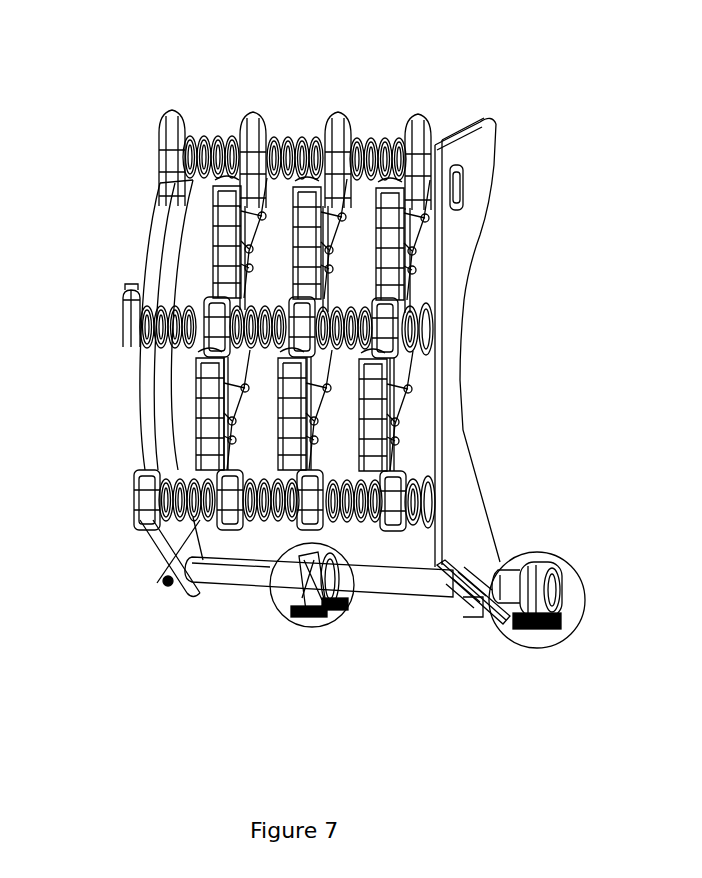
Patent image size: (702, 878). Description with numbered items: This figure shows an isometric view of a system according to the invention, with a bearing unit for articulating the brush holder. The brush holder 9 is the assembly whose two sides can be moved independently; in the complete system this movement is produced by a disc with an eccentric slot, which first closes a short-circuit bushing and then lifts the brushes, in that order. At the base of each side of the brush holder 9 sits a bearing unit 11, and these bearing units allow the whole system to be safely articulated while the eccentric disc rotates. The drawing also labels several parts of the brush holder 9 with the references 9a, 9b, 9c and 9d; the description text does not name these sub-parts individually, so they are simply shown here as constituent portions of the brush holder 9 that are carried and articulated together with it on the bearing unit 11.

The brush holder 9 is at (475, 172).
The bottom bar 9a is at (235, 570).
The frame bracket 9b is at (185, 552).
The roller bracket 9c is at (183, 110).
The roller bracket 9d is at (340, 118).
The bearing unit 11 is at (285, 617).